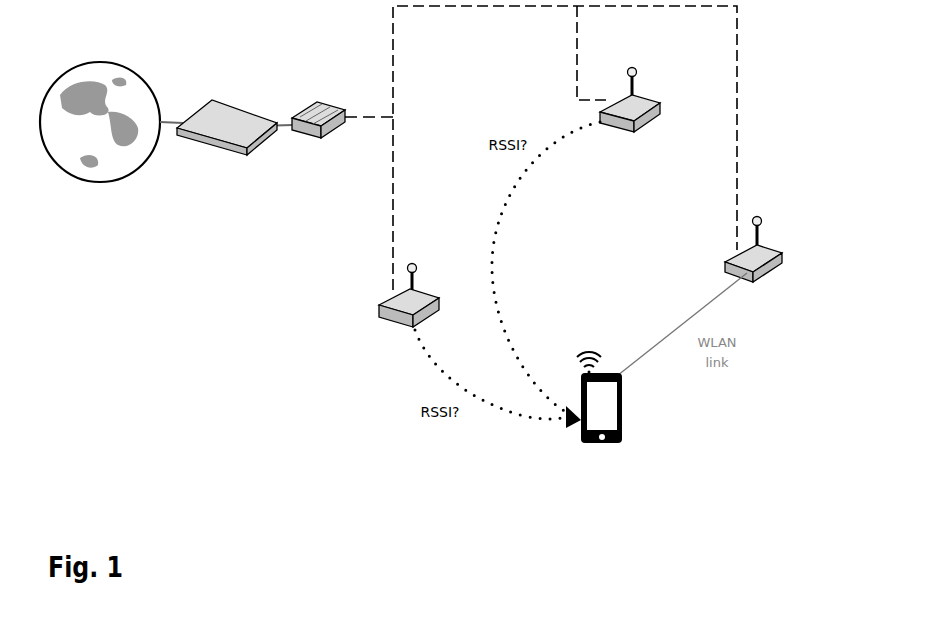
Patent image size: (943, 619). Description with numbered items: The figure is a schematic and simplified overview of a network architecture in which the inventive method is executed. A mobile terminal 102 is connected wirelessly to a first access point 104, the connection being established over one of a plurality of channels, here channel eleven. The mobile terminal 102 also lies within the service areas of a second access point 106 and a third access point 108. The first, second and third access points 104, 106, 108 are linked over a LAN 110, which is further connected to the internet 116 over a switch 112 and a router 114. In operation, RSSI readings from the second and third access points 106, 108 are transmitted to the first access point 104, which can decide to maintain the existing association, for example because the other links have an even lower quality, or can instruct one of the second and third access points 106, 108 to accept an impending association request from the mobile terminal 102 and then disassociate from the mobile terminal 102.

The mobile terminal 102 is at (624, 421).
The first access point 104 is at (787, 248).
The second access point 106 is at (378, 298).
The third access point 108 is at (603, 135).
The LAN 110 is at (478, 18).
The switch 112 is at (303, 155).
The router 114 is at (217, 158).
The internet 116 is at (95, 188).